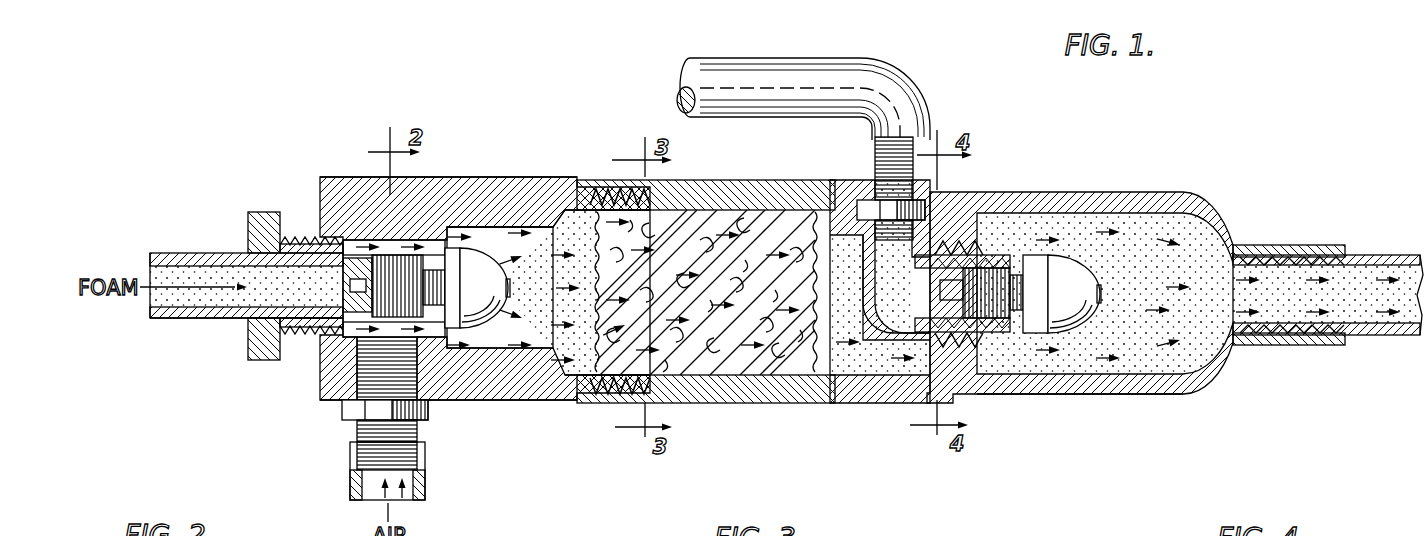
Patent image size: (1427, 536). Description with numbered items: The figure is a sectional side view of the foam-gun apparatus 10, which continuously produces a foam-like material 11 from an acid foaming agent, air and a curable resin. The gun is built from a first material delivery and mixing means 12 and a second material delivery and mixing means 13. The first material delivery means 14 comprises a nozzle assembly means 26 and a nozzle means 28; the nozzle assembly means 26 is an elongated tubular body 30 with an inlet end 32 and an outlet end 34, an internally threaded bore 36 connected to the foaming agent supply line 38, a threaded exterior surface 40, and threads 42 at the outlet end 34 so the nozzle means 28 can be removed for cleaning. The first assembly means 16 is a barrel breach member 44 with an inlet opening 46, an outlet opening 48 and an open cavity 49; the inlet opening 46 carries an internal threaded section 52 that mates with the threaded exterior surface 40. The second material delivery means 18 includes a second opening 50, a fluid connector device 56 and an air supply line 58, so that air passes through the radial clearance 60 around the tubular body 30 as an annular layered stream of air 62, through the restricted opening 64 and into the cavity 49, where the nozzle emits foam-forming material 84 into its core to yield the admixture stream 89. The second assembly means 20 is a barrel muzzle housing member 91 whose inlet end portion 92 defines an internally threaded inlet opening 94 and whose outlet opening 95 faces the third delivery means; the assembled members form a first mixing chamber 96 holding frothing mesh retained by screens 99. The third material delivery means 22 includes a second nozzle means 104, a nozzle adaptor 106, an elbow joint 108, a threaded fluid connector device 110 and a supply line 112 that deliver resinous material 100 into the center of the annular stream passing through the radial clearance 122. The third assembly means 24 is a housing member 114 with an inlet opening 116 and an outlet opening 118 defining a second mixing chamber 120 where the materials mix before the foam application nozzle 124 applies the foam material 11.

The foam-gun apparatus 10 is at (1218, 144).
The foam-like material 11 is at (1350, 284).
The first material delivery and mixing means 12 is at (452, 112).
The second material delivery and mixing means 13 is at (1083, 177).
The first material delivery means 14 is at (239, 203).
The first assembly means 16 is at (558, 170).
The second material delivery means 18 is at (382, 420).
The second assembly means 20 is at (706, 296).
The third material delivery means 22 is at (857, 186).
The third assembly means 24 is at (1116, 182).
The nozzle assembly means 26 is at (302, 226).
The nozzle means 28 is at (489, 342).
The tubular body 30 is at (250, 228).
The inlet end 32 is at (246, 316).
The outlet end 34 is at (432, 250).
The internally threaded bore 36 is at (307, 343).
The supply line 38 is at (197, 252).
The threaded exterior surface 40 is at (283, 352).
The threads 42 is at (397, 260).
The barrel breach member 44 is at (550, 402).
The first or inlet opening means 46 is at (338, 237).
The outlet opening means 48 is at (567, 210).
The open cavity 49 is at (492, 248).
The second opening means 50 is at (423, 385).
The internal threaded section 52 is at (333, 387).
The fluid connector device 56 is at (362, 413).
The supply line 58 is at (427, 480).
The radial clearance 60 is at (347, 240).
The annular layered stream of air 62 is at (428, 332).
The restricted opening 64 is at (452, 228).
The foam-forming material 84 is at (528, 276).
The admixture stream 89 is at (739, 365).
The barrel muzzle housing member 91 is at (713, 190).
The inlet end portion 92 is at (650, 193).
The internally threaded inlet opening 94 is at (627, 388).
The outlet opening 95 is at (866, 350).
The first mixing chamber 96 is at (808, 378).
The screens 99 is at (590, 300).
The resinous material 100 is at (1250, 201).
The second nozzle means 104 is at (1100, 336).
The nozzle adaptor 106 is at (991, 256).
The elbow joint 108 is at (858, 293).
The threaded fluid connector device 110 is at (920, 205).
The supply line 112 is at (905, 80).
The housing member 114 is at (1076, 395).
The inlet opening 116 is at (960, 362).
The outlet opening 118 is at (1281, 247).
The second mixing chamber 120 is at (1150, 217).
The radial clearance 122 is at (903, 340).
The foam application nozzle 124 is at (1371, 334).